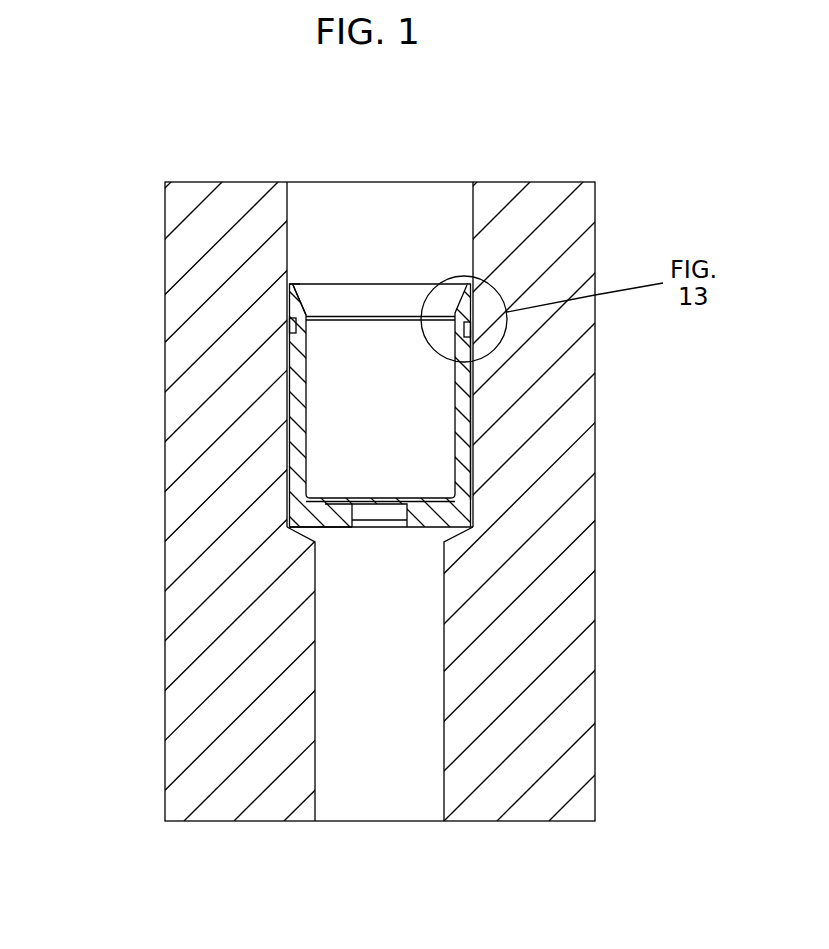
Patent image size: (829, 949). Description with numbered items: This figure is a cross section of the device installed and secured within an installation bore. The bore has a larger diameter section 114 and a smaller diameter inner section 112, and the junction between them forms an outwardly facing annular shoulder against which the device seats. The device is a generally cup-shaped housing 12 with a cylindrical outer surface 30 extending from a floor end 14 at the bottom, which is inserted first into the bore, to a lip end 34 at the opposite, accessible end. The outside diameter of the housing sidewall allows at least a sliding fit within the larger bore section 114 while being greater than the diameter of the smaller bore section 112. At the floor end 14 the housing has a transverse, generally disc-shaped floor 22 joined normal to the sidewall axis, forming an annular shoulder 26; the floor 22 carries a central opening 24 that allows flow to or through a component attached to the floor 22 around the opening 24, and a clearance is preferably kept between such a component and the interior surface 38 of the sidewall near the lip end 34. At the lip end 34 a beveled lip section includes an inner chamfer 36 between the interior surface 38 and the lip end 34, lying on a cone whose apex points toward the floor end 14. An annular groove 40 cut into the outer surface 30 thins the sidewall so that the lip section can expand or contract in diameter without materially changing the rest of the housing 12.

The housing 12 is at (390, 258).
The floor end 14 is at (414, 521).
The floor 22 is at (325, 513).
The central opening 24 is at (381, 516).
The annular shoulder 26 is at (471, 527).
The cylindrical outer surface 30 is at (483, 402).
The lip end 34 is at (305, 280).
The inner chamfer 36 is at (307, 297).
The interior surface 38 is at (460, 430).
The annular groove 40 is at (287, 328).
The inner section of the bore 112 is at (450, 694).
The larger diameter section of the bore 114 is at (473, 245).